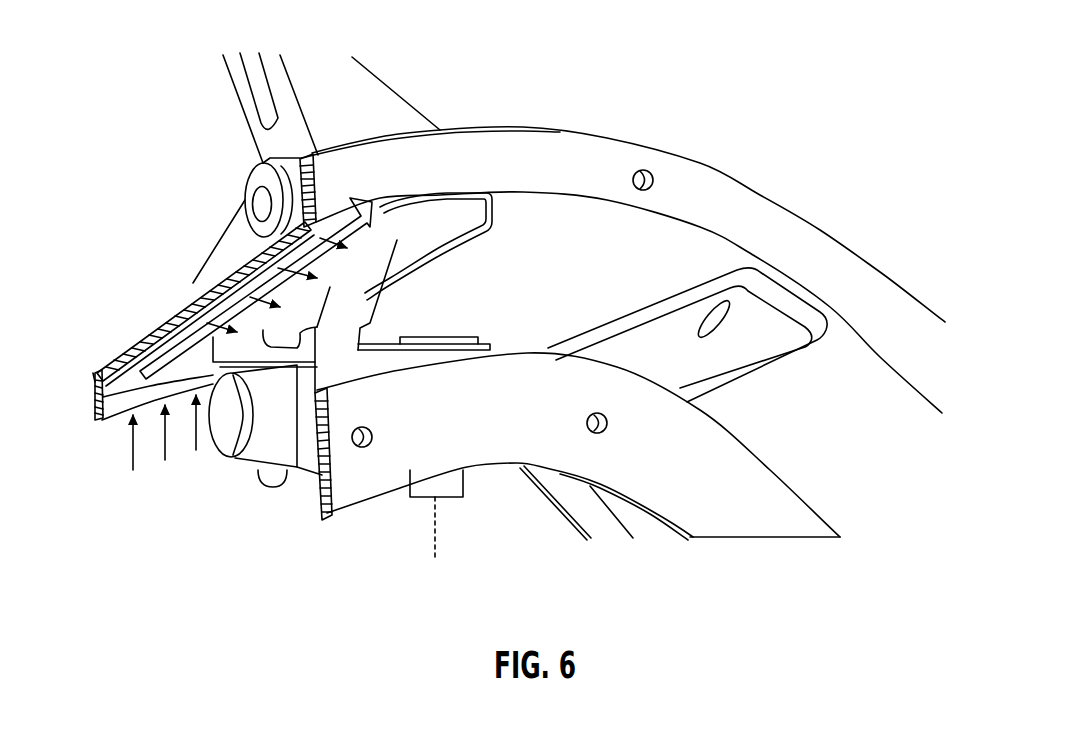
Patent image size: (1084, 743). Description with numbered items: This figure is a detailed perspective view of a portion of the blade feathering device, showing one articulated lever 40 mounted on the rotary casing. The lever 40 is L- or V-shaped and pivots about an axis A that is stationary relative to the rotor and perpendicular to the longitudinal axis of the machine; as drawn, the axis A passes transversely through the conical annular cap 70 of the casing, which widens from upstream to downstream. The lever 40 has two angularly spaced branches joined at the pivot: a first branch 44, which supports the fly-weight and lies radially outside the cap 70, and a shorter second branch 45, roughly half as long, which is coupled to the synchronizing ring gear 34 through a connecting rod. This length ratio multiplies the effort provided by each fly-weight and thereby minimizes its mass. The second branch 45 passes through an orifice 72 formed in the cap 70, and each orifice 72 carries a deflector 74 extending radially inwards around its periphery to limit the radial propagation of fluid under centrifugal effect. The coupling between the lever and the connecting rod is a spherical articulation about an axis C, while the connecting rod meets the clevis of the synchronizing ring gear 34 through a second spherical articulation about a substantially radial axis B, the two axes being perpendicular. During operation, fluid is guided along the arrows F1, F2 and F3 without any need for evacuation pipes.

The synchronizing ring gear 34 is at (706, 500).
The lever 40 is at (354, 61).
The first branch 44 is at (247, 103).
The second branch 45 is at (343, 303).
The annular cap 70 is at (890, 301).
The orifices 72 is at (442, 236).
The deflector 74 is at (102, 402).
The axis A is at (265, 204).
The axis B is at (437, 552).
The axis C is at (231, 428).
The arrow F1 is at (128, 442).
The arrow F2 is at (100, 356).
The arrow F3 is at (253, 305).